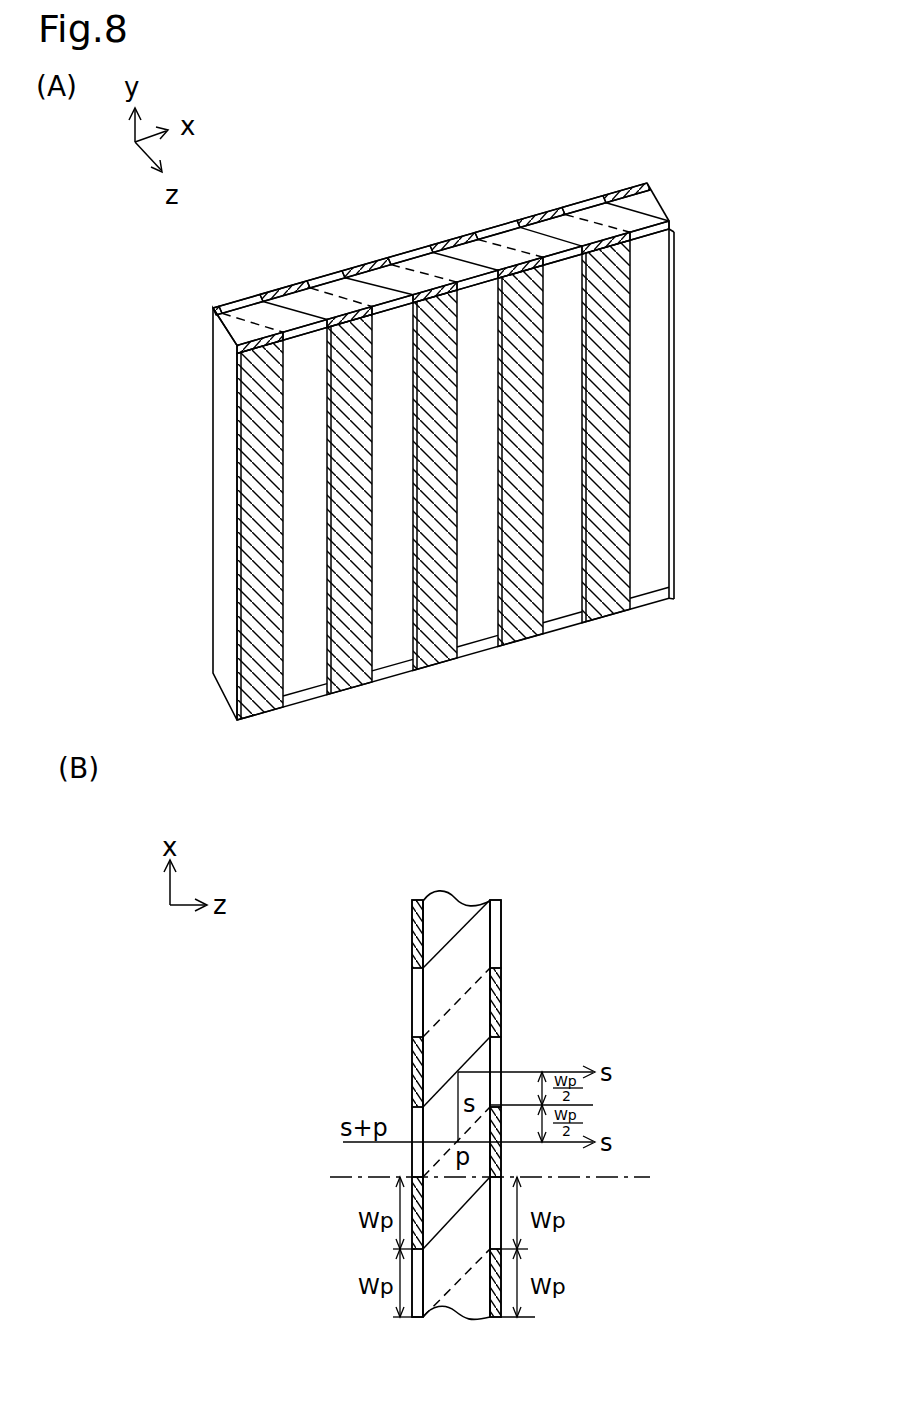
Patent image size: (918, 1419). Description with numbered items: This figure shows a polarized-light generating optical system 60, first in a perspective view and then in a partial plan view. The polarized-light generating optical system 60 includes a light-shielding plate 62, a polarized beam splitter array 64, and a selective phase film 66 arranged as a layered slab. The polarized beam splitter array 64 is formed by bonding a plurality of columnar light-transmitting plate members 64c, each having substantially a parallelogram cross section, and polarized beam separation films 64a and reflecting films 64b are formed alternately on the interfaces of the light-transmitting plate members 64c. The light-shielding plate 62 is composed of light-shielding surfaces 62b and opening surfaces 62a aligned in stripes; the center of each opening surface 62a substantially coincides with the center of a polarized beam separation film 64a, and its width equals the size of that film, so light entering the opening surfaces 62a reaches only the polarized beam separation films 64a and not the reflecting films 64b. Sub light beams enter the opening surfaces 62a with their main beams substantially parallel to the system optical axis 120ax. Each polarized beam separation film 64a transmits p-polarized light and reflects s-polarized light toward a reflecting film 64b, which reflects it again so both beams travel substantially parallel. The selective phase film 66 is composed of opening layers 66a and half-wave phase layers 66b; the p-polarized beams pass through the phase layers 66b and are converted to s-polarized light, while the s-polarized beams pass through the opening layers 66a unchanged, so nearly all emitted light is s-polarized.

The polarized-light generating optical system 60 is at (368, 166).
The light-shielding plate 62 is at (648, 185).
The opening surfaces 62a is at (496, 228).
The light-shielding surfaces 62b is at (541, 216).
The polarized beam splitter array 64 is at (656, 201).
The polarized beam separation film 64a is at (304, 281).
The reflecting film 64b is at (383, 285).
The light-transmitting plate members 64c is at (352, 292).
The selective phase film 66 is at (668, 231).
The opening layers 66a is at (664, 600).
The λ/2 phase layers 66b is at (610, 609).
The system optical axis 120ax is at (650, 1177).